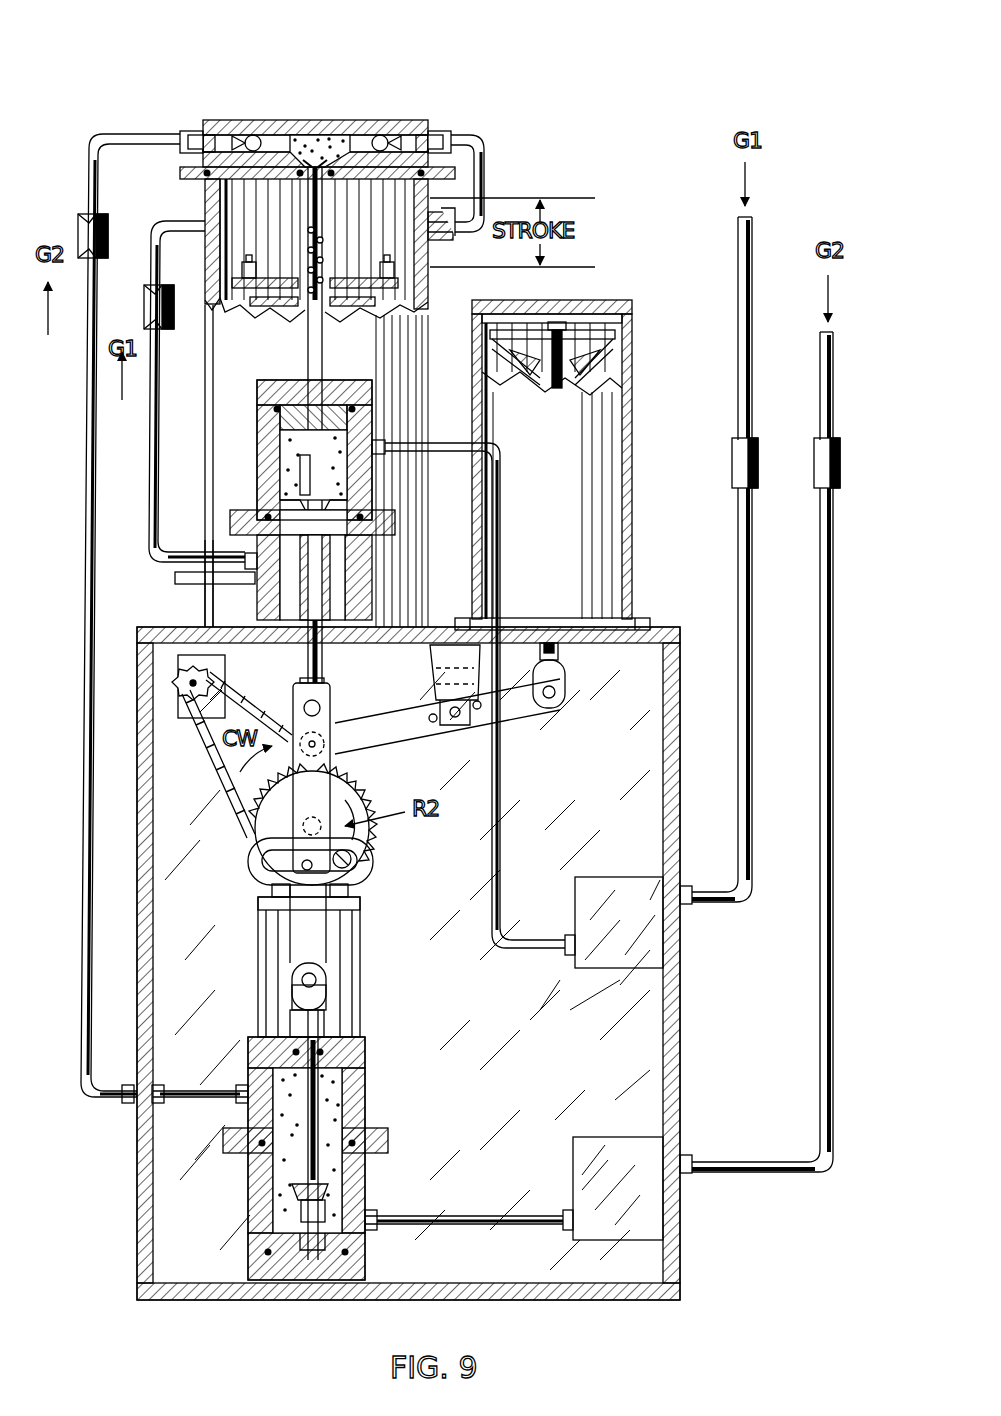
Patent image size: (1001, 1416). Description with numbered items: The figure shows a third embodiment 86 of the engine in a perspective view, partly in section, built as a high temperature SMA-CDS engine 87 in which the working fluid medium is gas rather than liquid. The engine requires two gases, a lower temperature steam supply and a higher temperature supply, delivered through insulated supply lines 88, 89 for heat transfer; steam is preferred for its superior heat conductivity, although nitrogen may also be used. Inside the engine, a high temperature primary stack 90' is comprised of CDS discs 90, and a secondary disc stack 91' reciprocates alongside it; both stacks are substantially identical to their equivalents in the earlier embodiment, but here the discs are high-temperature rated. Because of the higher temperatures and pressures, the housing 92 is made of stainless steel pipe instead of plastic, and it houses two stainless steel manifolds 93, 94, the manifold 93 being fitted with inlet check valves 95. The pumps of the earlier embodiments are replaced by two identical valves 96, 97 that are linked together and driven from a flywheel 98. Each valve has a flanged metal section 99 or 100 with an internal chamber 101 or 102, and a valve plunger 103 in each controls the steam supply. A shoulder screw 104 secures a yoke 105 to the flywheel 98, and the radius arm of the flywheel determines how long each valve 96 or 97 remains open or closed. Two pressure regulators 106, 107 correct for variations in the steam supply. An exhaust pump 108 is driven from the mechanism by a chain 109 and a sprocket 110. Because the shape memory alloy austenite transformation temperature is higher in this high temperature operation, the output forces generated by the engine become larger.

The third embodiment 86 is at (160, 85).
The high temperature SMA-CDS engine 87 is at (505, 132).
The insulated supply line 88 is at (738, 437).
The insulated supply line 89 is at (834, 525).
The CDS disc 90 is at (364, 266).
The primary stack 90' is at (294, 251).
The secondary disc stack 91' is at (552, 439).
The housing 92 is at (205, 200).
The manifold 93 is at (486, 172).
The manifold 94 is at (205, 607).
The inlet check valve 95 is at (258, 135).
The valve 96 is at (395, 1142).
The valve 97 is at (283, 380).
The flywheel 98 is at (246, 832).
The flanged metal section 99 is at (257, 432).
The flanged metal section 100 is at (230, 617).
The internal chamber 101 is at (332, 1192).
The internal chamber 102 is at (345, 1095).
The valve plunger 103 is at (322, 560).
The shoulder screw 104 is at (348, 857).
The yoke 105 is at (330, 926).
The pressure regulator 106 is at (618, 877).
The pressure regulator 107 is at (628, 1135).
The exhaust pump 108 is at (172, 722).
The chain 109 is at (183, 698).
The sprocket 110 is at (362, 792).